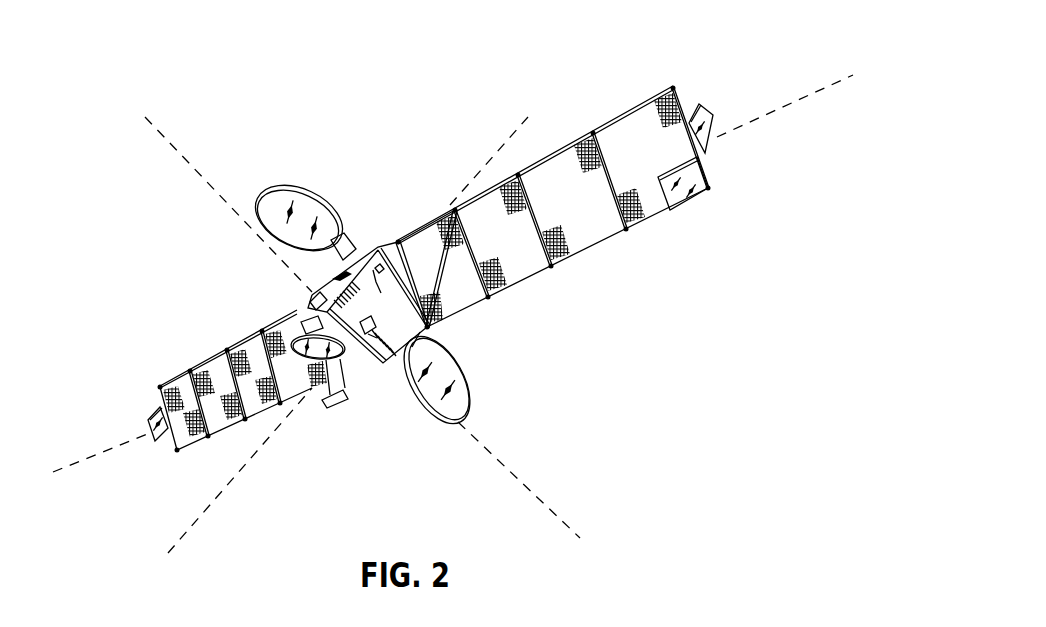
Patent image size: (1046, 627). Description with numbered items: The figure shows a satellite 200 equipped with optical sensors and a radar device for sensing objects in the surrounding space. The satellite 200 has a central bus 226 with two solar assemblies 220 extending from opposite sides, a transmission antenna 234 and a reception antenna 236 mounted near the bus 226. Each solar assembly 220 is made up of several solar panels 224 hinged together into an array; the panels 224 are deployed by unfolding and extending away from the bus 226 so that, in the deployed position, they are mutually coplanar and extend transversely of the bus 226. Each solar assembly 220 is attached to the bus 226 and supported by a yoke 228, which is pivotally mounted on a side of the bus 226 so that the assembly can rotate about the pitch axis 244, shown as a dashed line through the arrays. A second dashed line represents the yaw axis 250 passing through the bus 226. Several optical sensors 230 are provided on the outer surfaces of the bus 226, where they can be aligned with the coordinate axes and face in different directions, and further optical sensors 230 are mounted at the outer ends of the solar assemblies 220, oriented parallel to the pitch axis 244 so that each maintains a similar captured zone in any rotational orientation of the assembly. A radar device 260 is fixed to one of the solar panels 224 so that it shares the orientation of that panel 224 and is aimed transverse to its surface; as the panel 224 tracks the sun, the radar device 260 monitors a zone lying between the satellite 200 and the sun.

The satellite 200 is at (422, 206).
The solar assembly 220 is at (434, 263).
The solar panel 224 is at (522, 268).
The bus 226 is at (317, 285).
The yoke 228 is at (380, 246).
The optical sensor 230 is at (300, 320).
The transmission antenna 234 is at (281, 190).
The reception antenna 236 is at (468, 405).
The pitch axis 244 is at (773, 110).
The yaw axis 250 is at (205, 510).
The radar device 260 is at (698, 190).